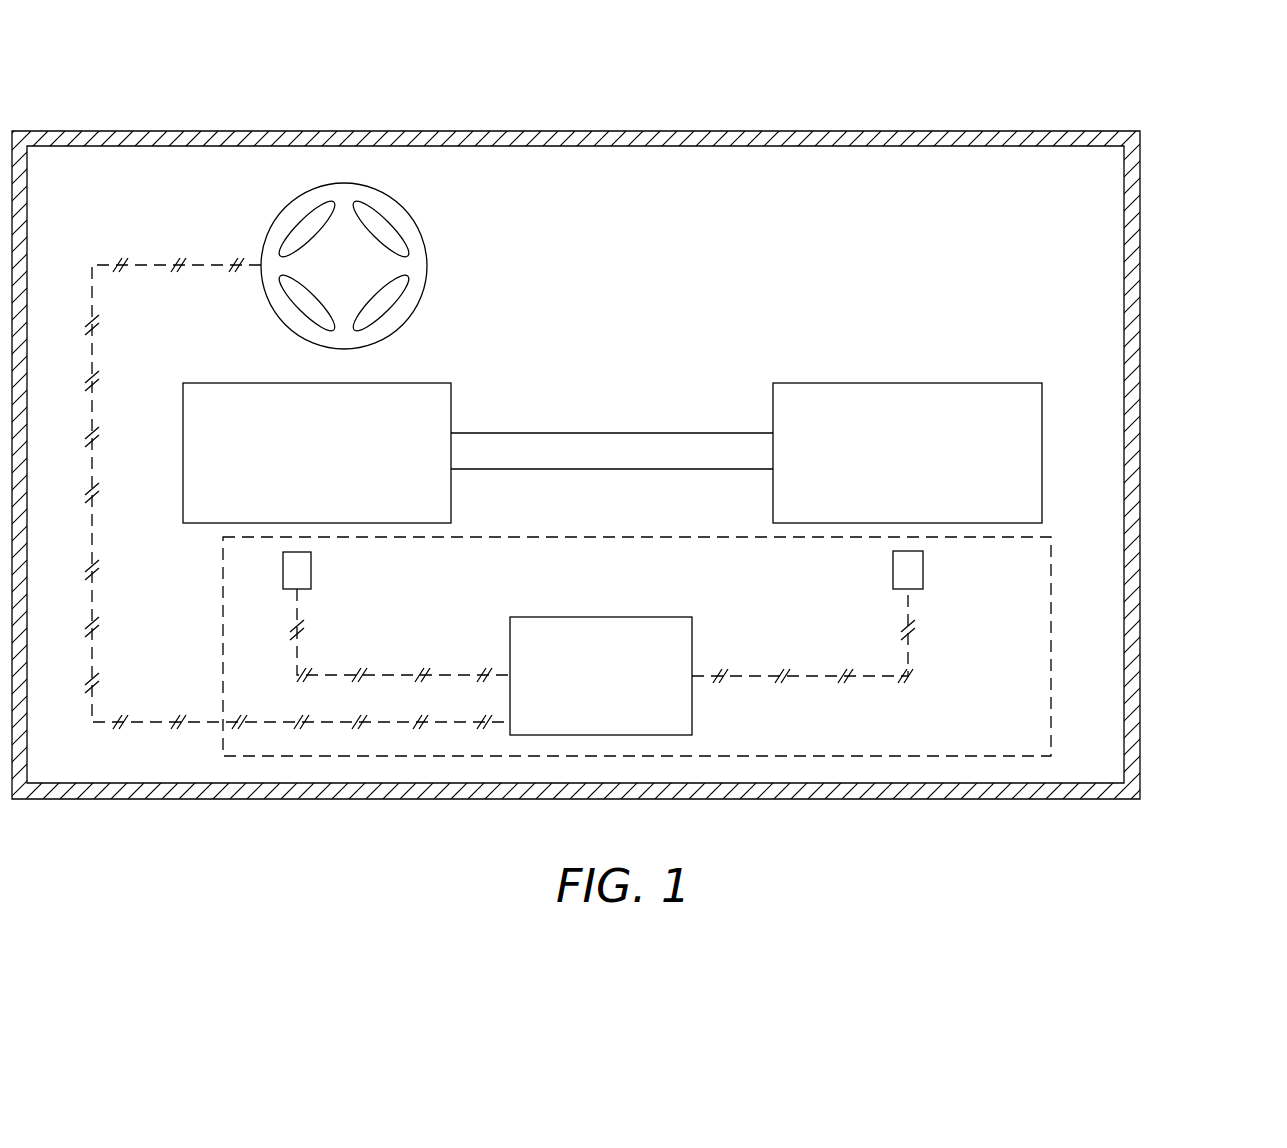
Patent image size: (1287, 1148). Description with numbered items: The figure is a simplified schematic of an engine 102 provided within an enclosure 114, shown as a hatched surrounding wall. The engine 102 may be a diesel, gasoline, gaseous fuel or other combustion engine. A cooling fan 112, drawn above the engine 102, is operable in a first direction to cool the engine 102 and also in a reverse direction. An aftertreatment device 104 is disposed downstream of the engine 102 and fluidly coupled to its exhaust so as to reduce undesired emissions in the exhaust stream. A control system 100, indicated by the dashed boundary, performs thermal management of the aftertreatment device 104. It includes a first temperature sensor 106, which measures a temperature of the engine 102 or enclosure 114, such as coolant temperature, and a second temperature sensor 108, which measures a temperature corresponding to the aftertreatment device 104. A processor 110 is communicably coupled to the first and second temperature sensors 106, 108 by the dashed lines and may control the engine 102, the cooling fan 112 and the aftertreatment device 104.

The control system 100 is at (637, 646).
The engine 102 is at (317, 453).
The aftertreatment device 104 is at (907, 453).
The first temperature sensor 106 is at (311, 566).
The second temperature sensor 108 is at (923, 570).
The processor 110 is at (601, 676).
The cooling fan 112 is at (427, 266).
The enclosure 114 is at (1140, 464).